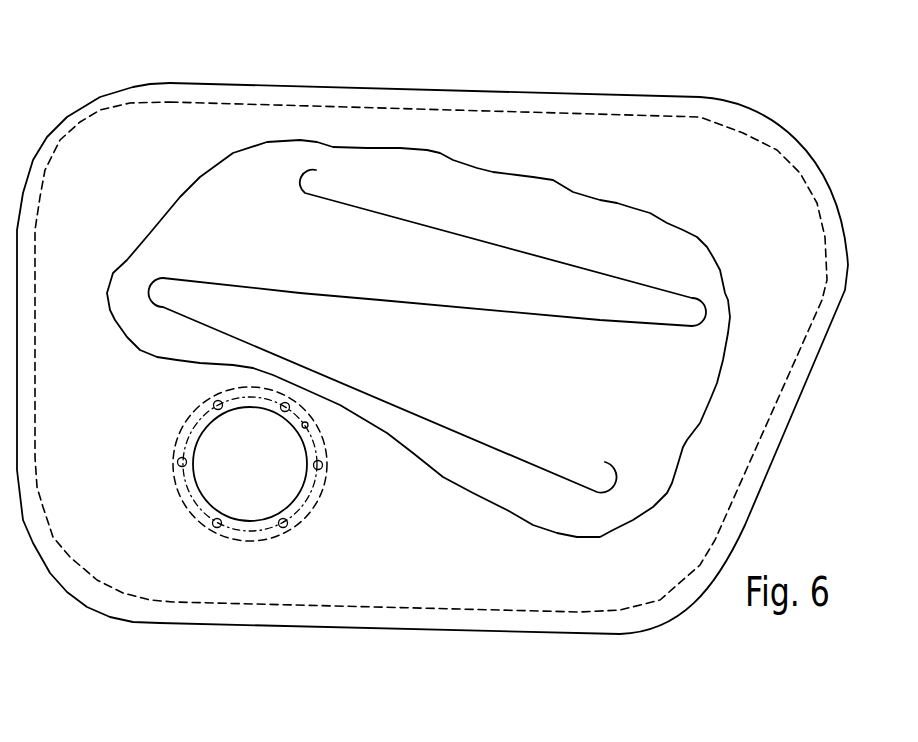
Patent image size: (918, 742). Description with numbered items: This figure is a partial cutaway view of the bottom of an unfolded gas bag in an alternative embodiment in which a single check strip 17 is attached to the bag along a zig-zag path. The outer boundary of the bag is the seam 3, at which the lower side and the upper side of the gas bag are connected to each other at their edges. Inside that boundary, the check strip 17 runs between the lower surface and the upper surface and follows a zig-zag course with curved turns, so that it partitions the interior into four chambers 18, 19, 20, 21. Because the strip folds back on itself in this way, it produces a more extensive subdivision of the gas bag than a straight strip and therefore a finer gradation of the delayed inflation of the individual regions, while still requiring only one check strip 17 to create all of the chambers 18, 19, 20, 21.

The seam 3 is at (362, 108).
The check strip 17 is at (508, 248).
The chamber 18 is at (433, 537).
The chamber 19 is at (557, 389).
The chamber 20 is at (322, 267).
The chamber 21 is at (574, 160).